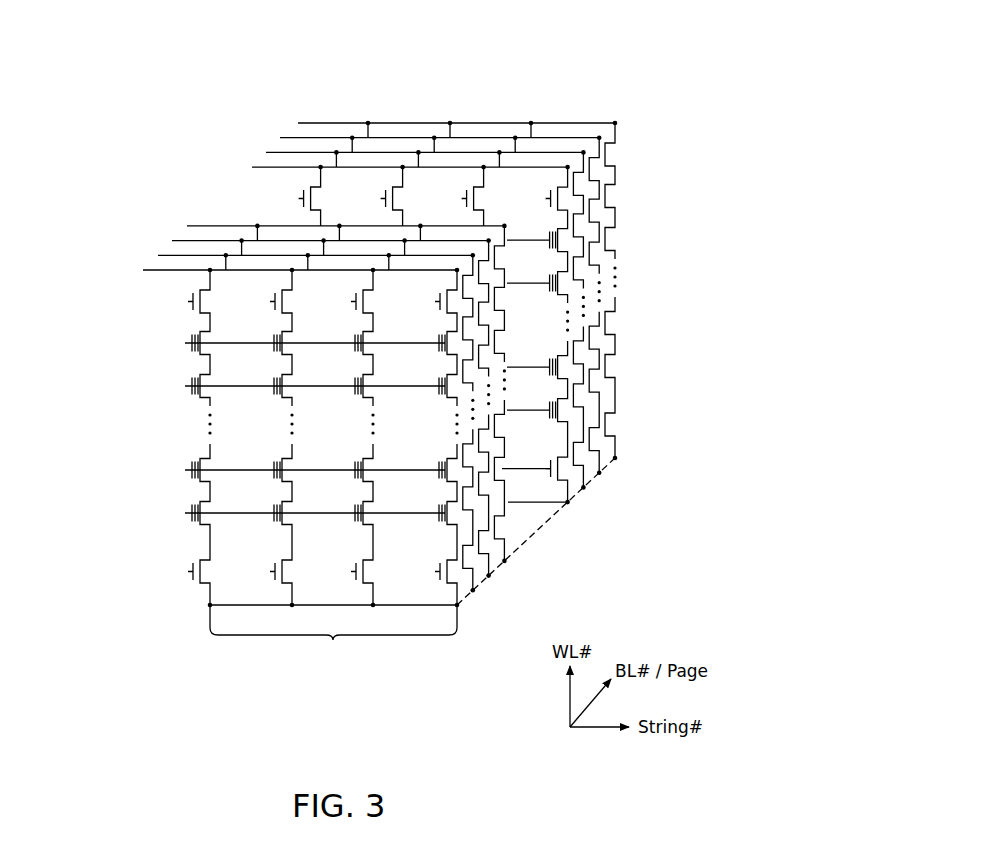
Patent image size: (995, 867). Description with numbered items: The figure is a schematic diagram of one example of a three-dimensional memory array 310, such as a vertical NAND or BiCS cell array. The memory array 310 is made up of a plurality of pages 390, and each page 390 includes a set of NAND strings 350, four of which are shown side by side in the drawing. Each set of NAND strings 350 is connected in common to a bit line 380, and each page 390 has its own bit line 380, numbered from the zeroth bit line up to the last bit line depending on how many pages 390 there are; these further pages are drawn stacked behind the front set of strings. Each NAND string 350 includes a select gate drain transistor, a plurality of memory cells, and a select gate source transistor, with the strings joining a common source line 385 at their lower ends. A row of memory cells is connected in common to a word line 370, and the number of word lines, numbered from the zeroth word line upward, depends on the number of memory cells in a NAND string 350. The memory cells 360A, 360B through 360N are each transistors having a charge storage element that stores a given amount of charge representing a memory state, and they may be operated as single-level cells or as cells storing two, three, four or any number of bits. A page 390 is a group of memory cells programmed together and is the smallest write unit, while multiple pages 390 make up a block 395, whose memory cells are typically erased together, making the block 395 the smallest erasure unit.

The 3D memory array 310 is at (644, 78).
The NAND string 350 is at (333, 641).
The memory cell 360N is at (192, 350).
The memory cell 360B is at (192, 463).
The memory cell 360A is at (192, 508).
The word line 370 is at (150, 510).
The bit line 380 is at (157, 271).
The source line 385 is at (387, 606).
The page 390 is at (617, 276).
The block 395 is at (470, 603).